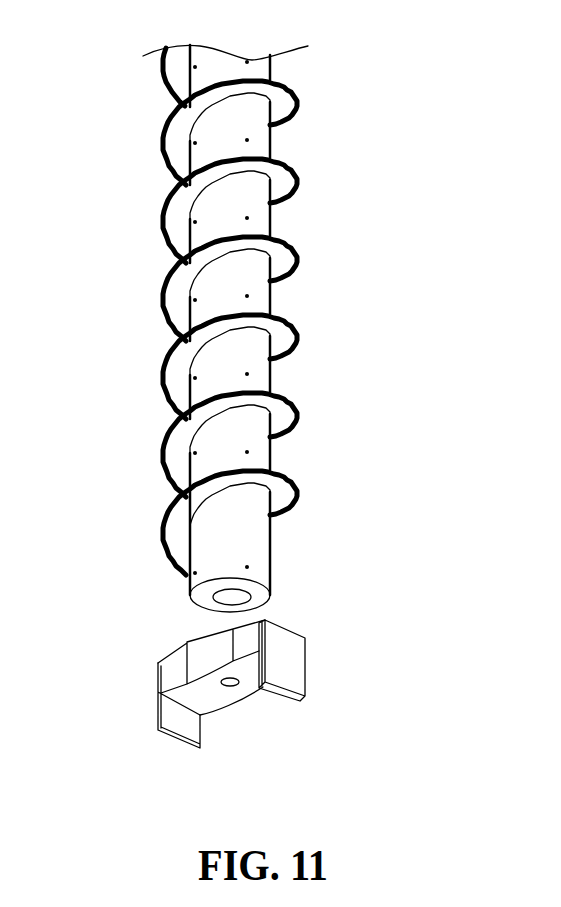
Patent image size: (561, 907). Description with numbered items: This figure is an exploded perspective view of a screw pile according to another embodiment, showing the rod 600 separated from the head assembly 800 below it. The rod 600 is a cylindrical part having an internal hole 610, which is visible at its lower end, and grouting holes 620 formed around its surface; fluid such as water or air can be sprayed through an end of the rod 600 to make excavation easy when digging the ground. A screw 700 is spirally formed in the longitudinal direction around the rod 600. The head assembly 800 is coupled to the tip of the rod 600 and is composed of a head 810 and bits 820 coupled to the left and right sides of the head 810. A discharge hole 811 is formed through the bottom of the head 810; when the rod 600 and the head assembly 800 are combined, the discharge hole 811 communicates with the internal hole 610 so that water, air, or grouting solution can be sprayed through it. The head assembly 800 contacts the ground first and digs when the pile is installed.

The rod 600 is at (257, 219).
The screw 700 is at (285, 103).
The grouting holes 620 is at (250, 294).
The internal hole 610 is at (251, 602).
The head assembly 800 is at (258, 686).
The head 810 is at (203, 645).
The bits 820 is at (293, 677).
The discharge hole 811 is at (232, 686).